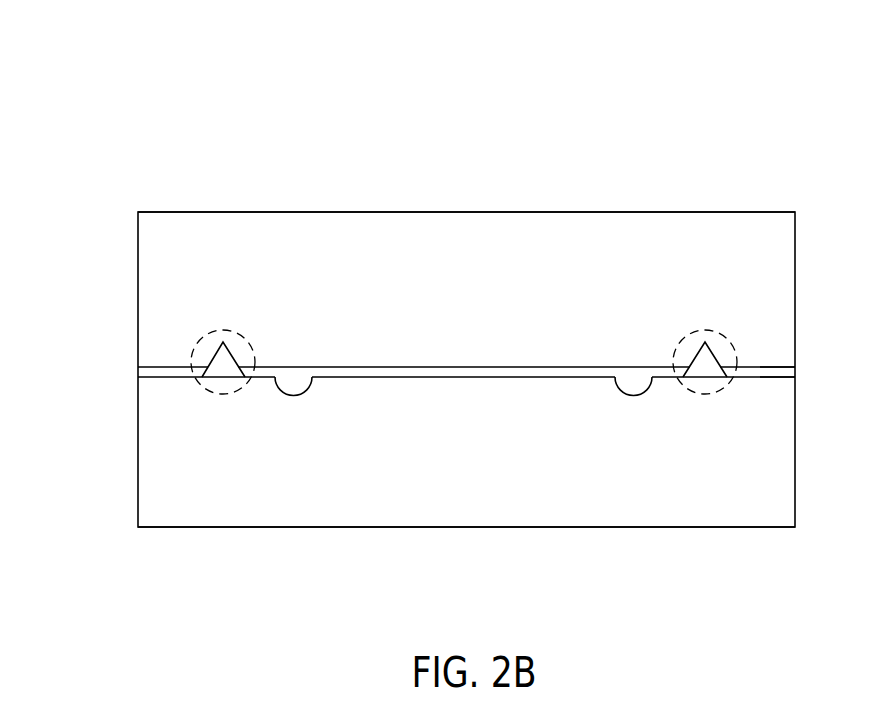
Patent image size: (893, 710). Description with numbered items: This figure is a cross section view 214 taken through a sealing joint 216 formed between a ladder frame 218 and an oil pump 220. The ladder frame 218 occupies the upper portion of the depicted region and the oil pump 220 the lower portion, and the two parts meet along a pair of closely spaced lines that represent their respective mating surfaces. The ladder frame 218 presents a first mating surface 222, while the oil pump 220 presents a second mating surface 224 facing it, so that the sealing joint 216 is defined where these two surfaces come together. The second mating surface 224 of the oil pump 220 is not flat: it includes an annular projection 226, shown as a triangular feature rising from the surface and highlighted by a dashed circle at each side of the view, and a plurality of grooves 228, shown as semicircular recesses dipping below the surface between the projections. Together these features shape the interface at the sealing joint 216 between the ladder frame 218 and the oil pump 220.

The cross section view 214 is at (84, 98).
The sealing joint 216 is at (808, 369).
The ladder frame 218 is at (636, 224).
The oil pump 220 is at (490, 511).
The first mating surface 222 is at (402, 366).
The second mating surface 224 is at (457, 378).
The annular projection 226 is at (229, 346).
The grooves 228 is at (290, 390).